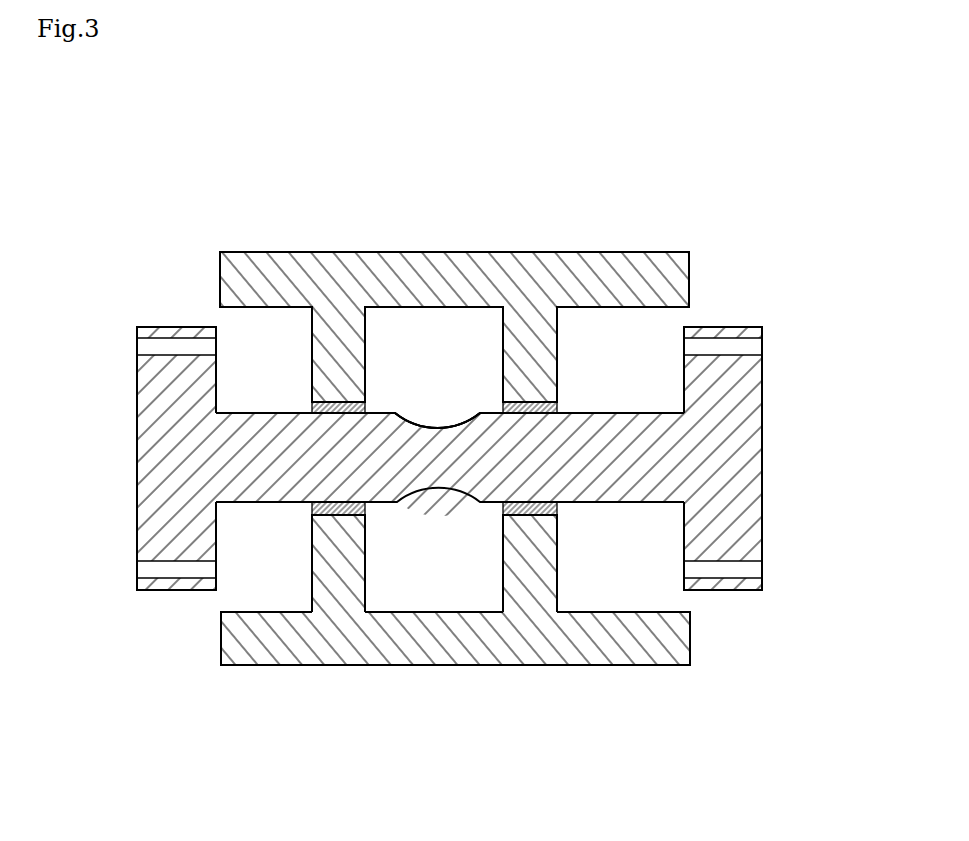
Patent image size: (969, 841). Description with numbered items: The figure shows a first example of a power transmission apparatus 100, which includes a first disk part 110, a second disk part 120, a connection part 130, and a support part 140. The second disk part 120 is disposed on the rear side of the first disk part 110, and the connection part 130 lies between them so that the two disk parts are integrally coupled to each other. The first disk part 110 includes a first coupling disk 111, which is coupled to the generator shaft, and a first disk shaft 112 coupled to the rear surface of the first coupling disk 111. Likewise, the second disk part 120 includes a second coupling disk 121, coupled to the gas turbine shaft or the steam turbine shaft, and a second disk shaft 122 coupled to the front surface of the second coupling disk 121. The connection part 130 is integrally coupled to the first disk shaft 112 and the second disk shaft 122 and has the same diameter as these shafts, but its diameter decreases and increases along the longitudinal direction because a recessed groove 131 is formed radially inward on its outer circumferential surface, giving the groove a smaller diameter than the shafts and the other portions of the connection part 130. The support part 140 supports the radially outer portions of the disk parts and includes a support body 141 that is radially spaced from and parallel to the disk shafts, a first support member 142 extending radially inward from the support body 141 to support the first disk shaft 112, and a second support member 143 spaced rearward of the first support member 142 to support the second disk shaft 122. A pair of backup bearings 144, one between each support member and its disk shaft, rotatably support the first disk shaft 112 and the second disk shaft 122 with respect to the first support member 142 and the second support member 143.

The power transmission apparatus 100 is at (130, 140).
The first disk part 110 is at (217, 545).
The first coupling disk 111 is at (168, 533).
The first disk shaft 112 is at (265, 478).
The second disk part 120 is at (627, 544).
The second coupling disk 121 is at (740, 513).
The second disk shaft 122 is at (630, 467).
The connection part 130 is at (485, 389).
The recessed groove 131 is at (444, 424).
The support part 140 is at (455, 482).
The support body 141 is at (457, 637).
The first support member 142 is at (347, 558).
The second support member 143 is at (537, 557).
The backup bearing 144 is at (330, 402).